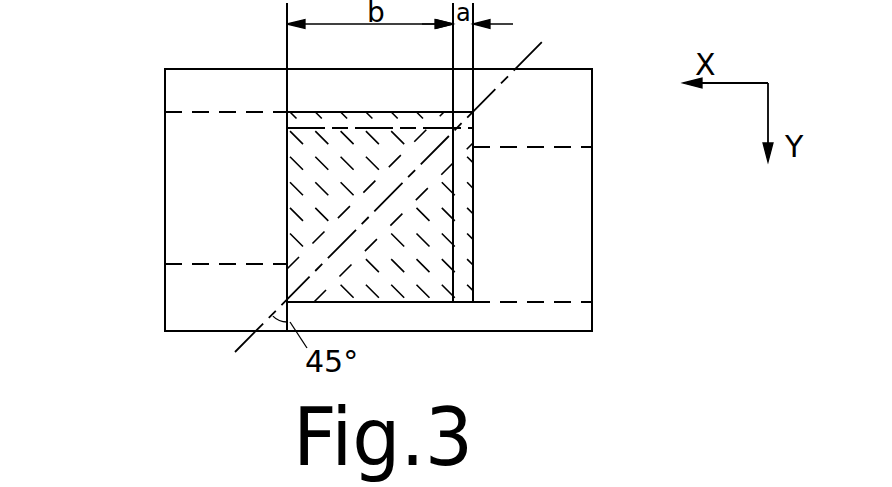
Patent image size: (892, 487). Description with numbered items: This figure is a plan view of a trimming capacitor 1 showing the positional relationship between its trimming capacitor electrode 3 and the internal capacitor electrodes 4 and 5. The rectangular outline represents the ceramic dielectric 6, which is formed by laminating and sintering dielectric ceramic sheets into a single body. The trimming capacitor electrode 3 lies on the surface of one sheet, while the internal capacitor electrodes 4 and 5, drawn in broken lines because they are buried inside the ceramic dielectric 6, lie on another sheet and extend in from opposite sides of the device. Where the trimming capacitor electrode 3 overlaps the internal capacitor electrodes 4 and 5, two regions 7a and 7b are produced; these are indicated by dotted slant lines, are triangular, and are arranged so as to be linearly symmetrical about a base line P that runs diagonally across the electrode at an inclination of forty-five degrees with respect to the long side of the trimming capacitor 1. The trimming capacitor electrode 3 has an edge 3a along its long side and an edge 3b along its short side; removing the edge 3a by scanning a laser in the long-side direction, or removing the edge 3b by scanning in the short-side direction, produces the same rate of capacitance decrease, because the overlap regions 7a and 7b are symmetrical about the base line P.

The trimming capacitor 1 is at (109, 163).
The trimming capacitor electrode 3 is at (287, 203).
The edge of the trimming capacitor electrode 3a is at (297, 130).
The edge of the trimming capacitor electrode 3b is at (468, 220).
The internal capacitor electrode 4 is at (238, 122).
The internal capacitor electrode 5 is at (501, 288).
The ceramic dielectric 6 is at (563, 80).
The overlap region 7a is at (297, 243).
The overlap region 7b is at (393, 288).
The base line P is at (400, 192).